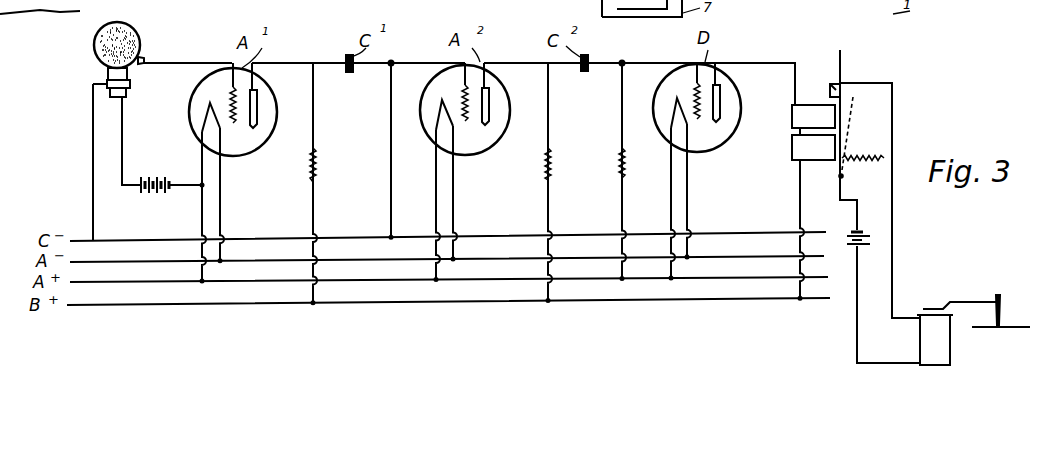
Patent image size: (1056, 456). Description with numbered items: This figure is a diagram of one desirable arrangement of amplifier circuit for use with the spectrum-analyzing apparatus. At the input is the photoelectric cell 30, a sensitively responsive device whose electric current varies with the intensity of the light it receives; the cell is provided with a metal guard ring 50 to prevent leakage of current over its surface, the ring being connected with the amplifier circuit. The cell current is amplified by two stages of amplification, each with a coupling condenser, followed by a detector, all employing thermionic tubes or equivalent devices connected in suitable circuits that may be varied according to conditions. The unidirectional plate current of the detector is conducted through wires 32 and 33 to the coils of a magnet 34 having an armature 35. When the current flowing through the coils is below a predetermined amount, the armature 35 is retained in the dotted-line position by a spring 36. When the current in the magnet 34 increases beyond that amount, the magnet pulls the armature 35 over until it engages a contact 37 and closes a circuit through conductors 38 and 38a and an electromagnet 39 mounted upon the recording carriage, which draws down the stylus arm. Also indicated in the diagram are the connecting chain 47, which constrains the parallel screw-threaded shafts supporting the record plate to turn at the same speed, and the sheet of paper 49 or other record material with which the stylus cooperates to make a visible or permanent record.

The photoelectric cell 30 is at (138, 33).
The metal guard ring 50 is at (130, 85).
The wire 32 is at (772, 60).
The wire 33 is at (798, 190).
The magnet 34 is at (811, 110).
The armature 35 is at (845, 92).
The spring 36 is at (863, 155).
The contact 37 is at (839, 132).
The conductor 38 is at (893, 145).
The conductor 38a is at (857, 327).
The electromagnet 39 is at (945, 352).
The connecting chain 47 is at (1003, 308).
The sheet of paper 49 is at (1022, 326).